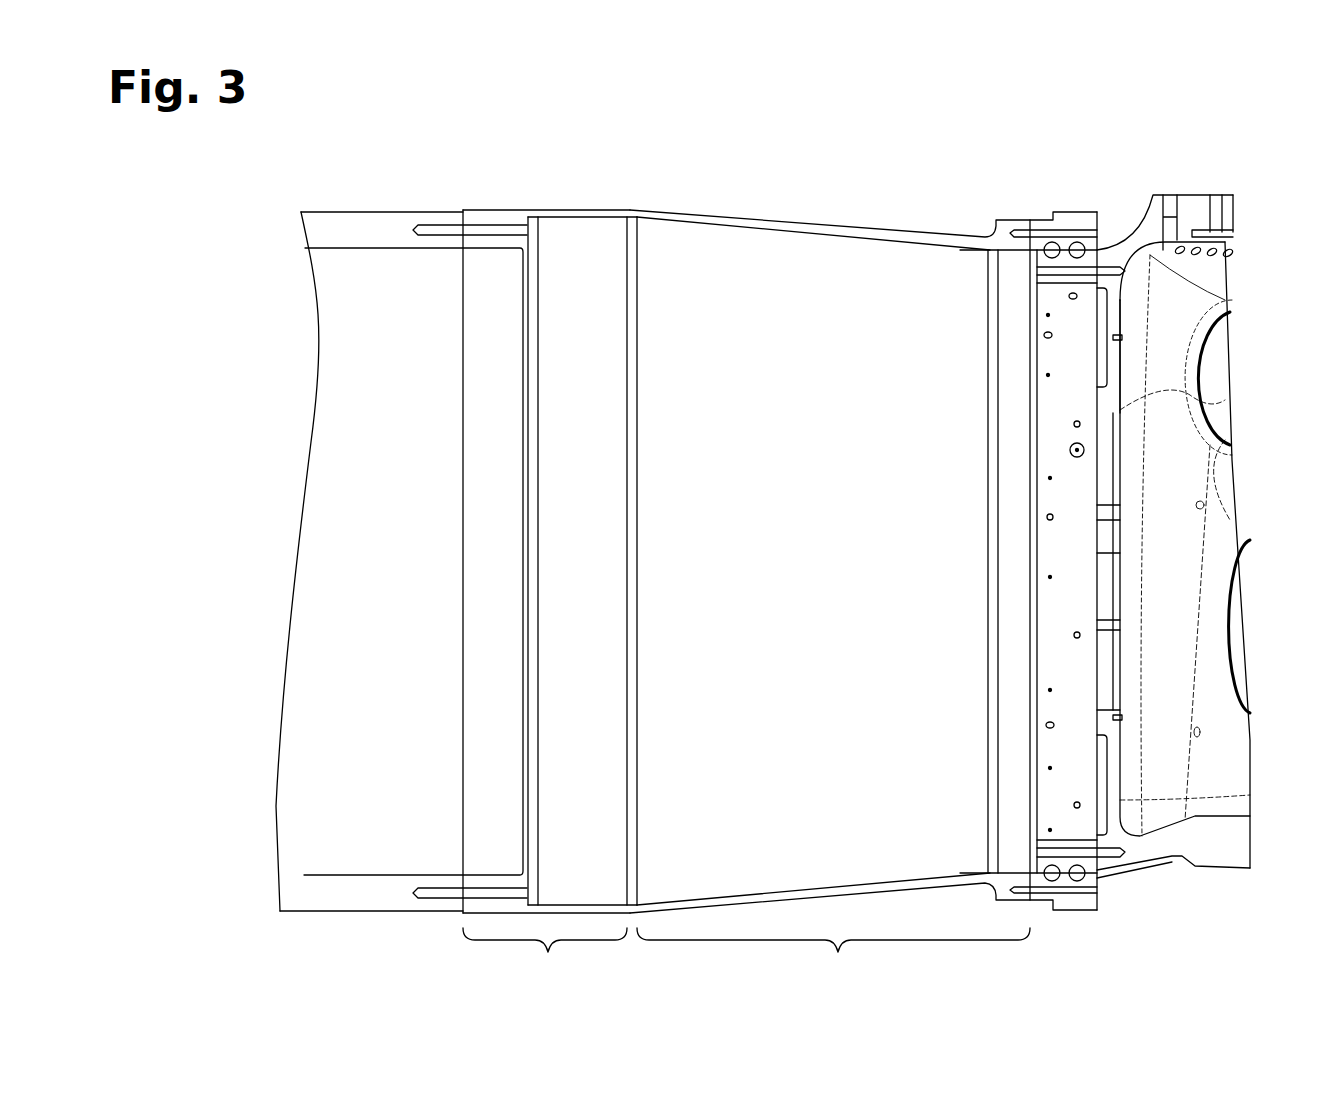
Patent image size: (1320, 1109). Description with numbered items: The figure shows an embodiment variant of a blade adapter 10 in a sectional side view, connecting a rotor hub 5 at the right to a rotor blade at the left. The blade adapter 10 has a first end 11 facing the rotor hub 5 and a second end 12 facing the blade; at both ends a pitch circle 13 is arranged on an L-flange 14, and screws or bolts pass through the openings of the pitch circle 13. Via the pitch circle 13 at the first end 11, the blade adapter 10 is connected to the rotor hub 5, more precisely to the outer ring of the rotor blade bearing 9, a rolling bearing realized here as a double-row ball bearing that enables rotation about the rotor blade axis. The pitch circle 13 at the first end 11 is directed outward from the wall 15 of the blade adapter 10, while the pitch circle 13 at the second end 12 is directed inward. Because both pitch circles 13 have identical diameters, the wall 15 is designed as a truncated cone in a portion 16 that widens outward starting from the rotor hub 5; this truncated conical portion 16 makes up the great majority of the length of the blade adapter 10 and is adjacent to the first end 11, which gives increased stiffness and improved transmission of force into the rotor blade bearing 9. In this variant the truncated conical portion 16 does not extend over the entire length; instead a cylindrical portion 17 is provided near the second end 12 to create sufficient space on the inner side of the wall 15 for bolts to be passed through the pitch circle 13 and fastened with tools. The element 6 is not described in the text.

The rotor hub 5 is at (1175, 482).
The carrier body 6 is at (345, 228).
The rotor blade bearing 9 is at (1097, 207).
The blade adapter 10 is at (764, 514).
The first end 11 is at (1032, 215).
The second end 12 is at (462, 202).
The pitch circle 13 is at (480, 225).
The L-flange 14 is at (513, 230).
The wall 15 is at (738, 225).
The truncated conical portion 16 is at (833, 959).
The cylindrical portion 17 is at (545, 959).